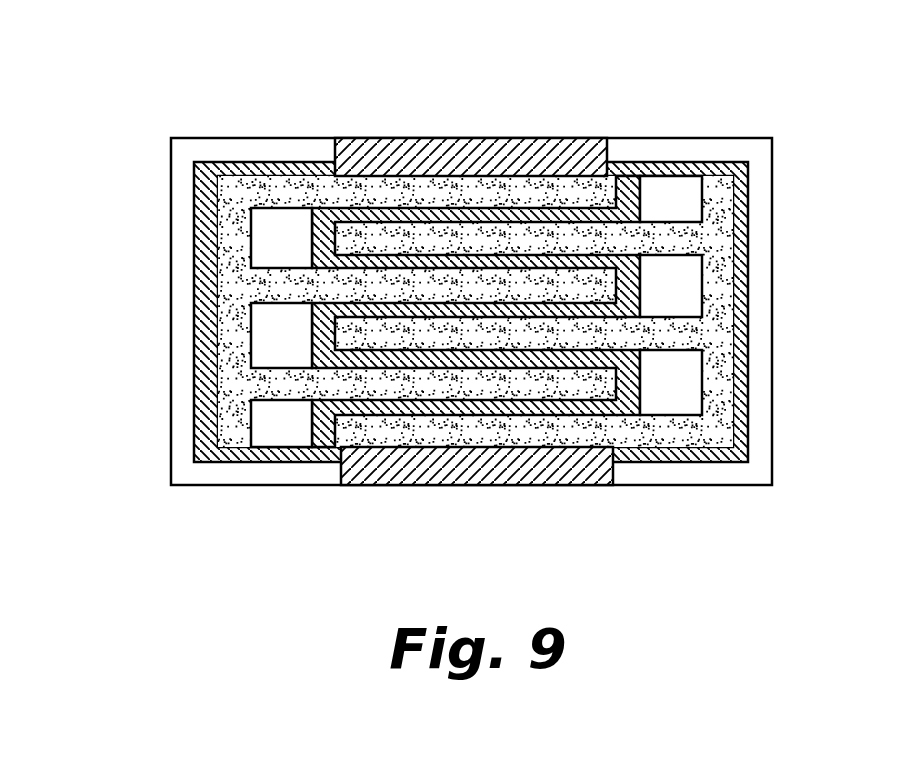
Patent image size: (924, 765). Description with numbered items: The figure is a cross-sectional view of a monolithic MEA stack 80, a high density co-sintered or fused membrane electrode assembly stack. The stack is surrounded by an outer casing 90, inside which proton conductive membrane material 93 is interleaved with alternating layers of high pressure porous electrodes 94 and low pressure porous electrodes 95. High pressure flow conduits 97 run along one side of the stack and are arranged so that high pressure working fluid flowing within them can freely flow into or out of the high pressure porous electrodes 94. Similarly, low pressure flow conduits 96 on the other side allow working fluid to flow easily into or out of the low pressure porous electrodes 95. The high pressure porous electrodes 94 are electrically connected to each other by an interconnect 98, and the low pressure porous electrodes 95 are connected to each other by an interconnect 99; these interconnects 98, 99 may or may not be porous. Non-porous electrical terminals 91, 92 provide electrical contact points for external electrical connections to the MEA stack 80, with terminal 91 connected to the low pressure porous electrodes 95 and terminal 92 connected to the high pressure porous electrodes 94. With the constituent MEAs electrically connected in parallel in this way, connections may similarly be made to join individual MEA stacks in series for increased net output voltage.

The monolithic MEA stack 80 is at (830, 68).
The outer casing 90 is at (171, 212).
The non-porous electrical terminal 91 is at (578, 473).
The non-porous electrical terminal 92 is at (380, 138).
The proton conductive membrane material 93 is at (475, 312).
The high pressure porous electrodes 94 is at (430, 383).
The low pressure porous electrodes 95 is at (512, 238).
The low pressure flow conduits 96 is at (667, 277).
The high pressure flow conduits 97 is at (285, 237).
The interconnect 98 is at (232, 322).
The interconnect 99 is at (723, 372).